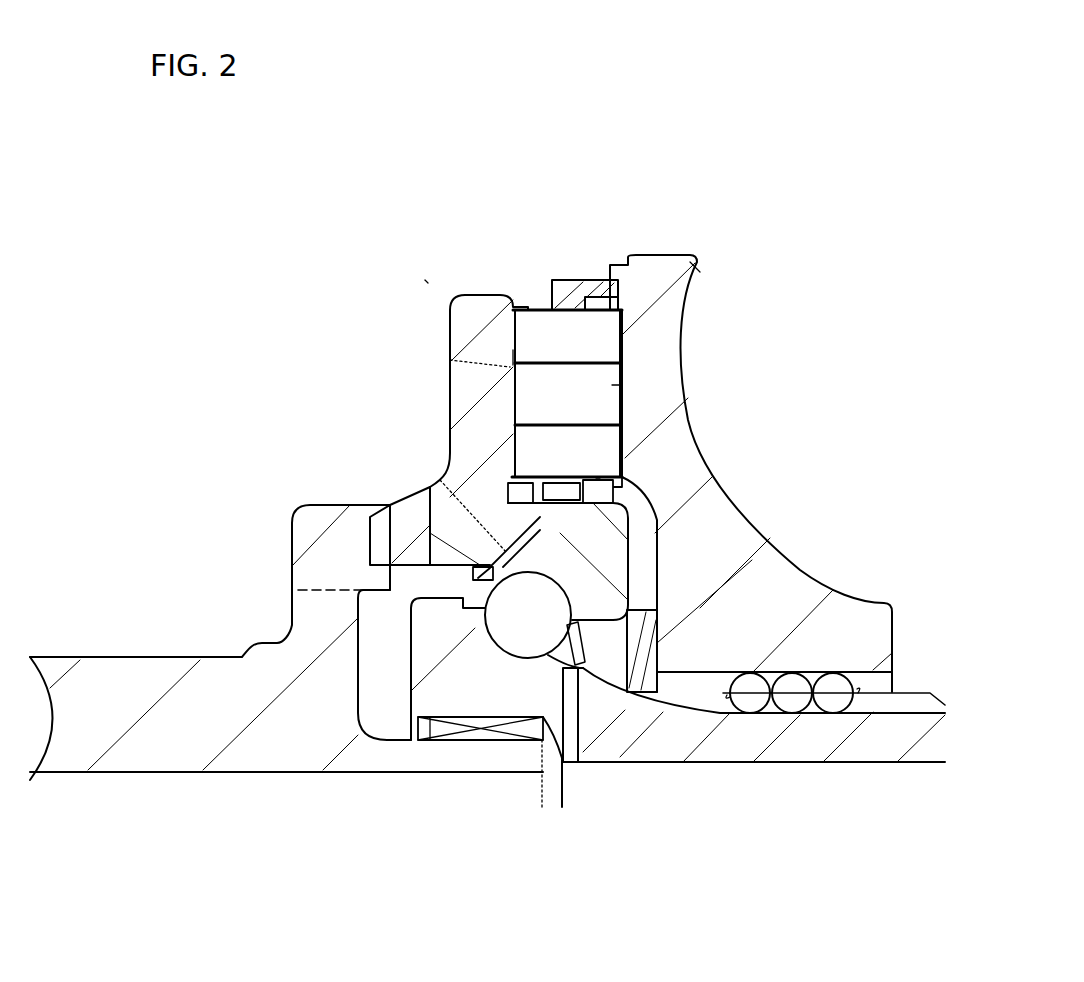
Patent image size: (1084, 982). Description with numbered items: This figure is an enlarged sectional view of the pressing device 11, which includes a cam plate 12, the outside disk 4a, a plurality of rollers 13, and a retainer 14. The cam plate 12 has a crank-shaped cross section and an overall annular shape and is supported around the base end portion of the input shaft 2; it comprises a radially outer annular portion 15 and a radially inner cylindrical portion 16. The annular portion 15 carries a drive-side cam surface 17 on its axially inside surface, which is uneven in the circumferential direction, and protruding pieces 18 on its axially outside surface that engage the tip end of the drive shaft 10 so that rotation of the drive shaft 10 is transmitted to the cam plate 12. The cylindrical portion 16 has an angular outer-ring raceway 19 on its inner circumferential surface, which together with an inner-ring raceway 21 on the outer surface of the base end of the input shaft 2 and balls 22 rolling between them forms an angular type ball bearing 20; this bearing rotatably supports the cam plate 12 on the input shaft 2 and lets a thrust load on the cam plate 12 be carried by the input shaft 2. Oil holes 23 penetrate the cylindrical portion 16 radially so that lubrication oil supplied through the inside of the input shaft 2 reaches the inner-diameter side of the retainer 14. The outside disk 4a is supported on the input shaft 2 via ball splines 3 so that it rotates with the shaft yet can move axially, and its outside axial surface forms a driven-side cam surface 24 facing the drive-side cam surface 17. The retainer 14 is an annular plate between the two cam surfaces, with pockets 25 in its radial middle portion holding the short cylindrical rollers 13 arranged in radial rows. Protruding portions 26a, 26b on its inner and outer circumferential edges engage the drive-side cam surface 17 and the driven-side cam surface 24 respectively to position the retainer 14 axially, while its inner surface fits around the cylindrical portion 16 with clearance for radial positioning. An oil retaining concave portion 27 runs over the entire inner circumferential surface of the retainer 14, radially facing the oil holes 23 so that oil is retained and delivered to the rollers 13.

The input shaft 2 is at (785, 750).
The ball splines 3 is at (833, 700).
The outside disk 4a is at (650, 290).
The drive shaft 10 is at (130, 680).
The pressing device 11 is at (425, 280).
The cam plate 12 is at (447, 406).
The rollers 13 is at (565, 400).
The retainer 14 is at (563, 280).
The annular portion 15 is at (450, 360).
The cylindrical portion 16 is at (592, 548).
The drive-side cam surface 17 is at (513, 357).
The protruding pieces 18 is at (413, 510).
The outer-ring raceway 19 is at (556, 598).
The angular type ball bearing 20 is at (523, 667).
The inner-ring raceway 21 is at (490, 660).
The balls 22 is at (542, 807).
The oil holes 23 is at (558, 513).
The driven-side cam surface 24 is at (612, 385).
The pockets 25 is at (700, 272).
The protruding portion 26a is at (510, 490).
The protruding portion 26b is at (600, 297).
The oil retaining concave portion 27 is at (596, 478).